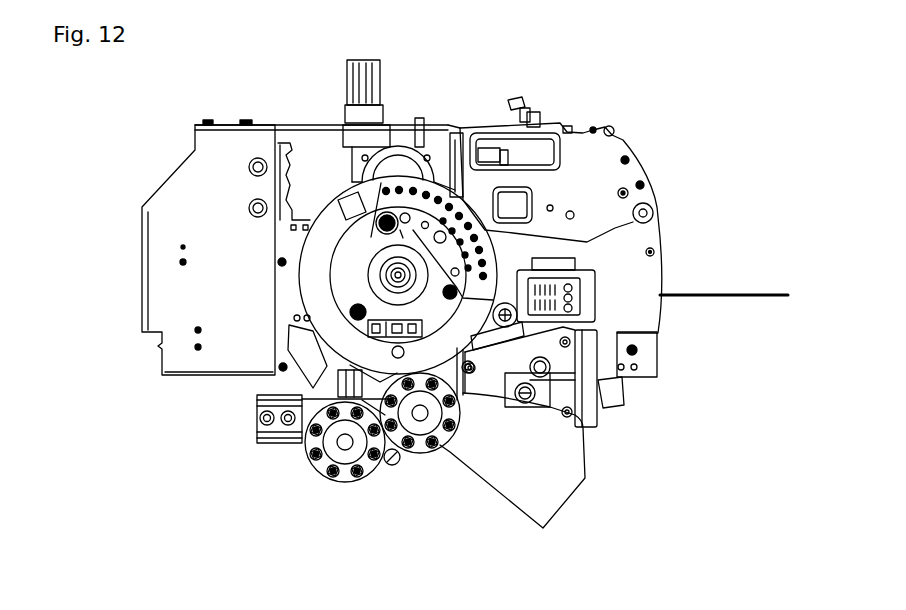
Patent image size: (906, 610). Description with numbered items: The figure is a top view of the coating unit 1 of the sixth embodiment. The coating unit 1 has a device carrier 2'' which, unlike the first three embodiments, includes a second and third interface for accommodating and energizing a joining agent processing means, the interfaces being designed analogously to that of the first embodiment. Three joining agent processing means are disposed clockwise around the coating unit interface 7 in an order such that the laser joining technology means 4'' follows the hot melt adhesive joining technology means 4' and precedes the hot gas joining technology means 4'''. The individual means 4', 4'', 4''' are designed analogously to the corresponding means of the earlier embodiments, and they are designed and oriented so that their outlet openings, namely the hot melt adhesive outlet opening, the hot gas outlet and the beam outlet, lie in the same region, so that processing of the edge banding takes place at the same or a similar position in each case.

The coating unit 1 is at (128, 158).
The coating unit interface 7 is at (385, 220).
The device carrier 2'' is at (624, 215).
The hot melt adhesive joining technology means 4' is at (609, 377).
The laser joining technology means 4'' is at (592, 460).
The hot gas joining technology means 4''' is at (358, 469).